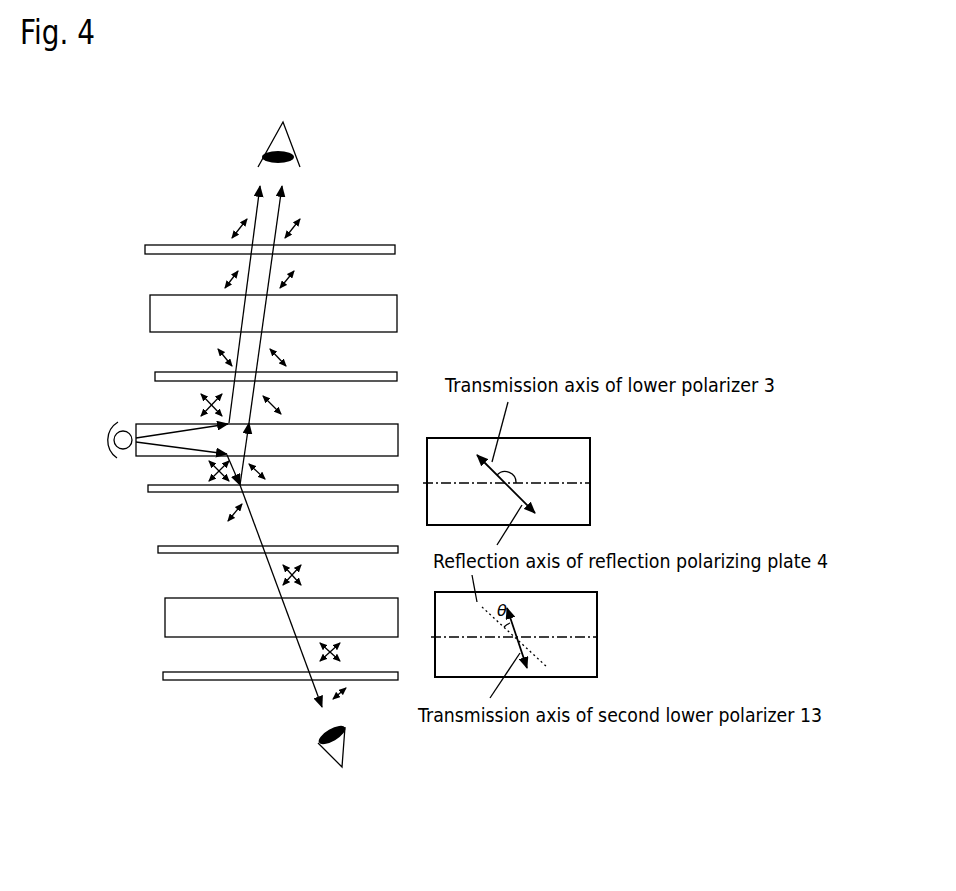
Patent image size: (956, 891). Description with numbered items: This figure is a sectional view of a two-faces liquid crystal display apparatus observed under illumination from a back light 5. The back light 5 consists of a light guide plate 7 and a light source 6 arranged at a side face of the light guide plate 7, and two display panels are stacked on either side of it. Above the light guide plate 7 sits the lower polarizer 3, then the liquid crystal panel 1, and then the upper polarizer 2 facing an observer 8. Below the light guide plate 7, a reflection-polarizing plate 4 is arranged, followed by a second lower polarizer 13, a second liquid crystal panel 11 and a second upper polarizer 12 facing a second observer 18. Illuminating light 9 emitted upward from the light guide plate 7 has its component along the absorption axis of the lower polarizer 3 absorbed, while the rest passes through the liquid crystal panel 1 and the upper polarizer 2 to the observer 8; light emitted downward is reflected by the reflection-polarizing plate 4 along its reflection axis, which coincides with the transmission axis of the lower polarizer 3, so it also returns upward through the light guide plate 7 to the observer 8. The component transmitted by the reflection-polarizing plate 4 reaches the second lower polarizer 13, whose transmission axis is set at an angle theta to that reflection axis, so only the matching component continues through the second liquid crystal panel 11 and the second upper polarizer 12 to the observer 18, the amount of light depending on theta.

The liquid crystal panel 1 is at (380, 310).
The upper polarizer 2 is at (387, 245).
The lower polarizer 3 is at (392, 370).
The reflection-polarizing plate 4 is at (155, 488).
The back light 5 is at (93, 445).
The light source 6 is at (107, 430).
The light guide plate 7 is at (163, 428).
The observer 8 is at (292, 137).
The illuminating light 9 is at (150, 437).
The second liquid crystal panel 11 is at (180, 623).
The second upper polarizer 12 is at (168, 680).
The second lower polarizer 13 is at (168, 550).
The observer 18 is at (328, 757).